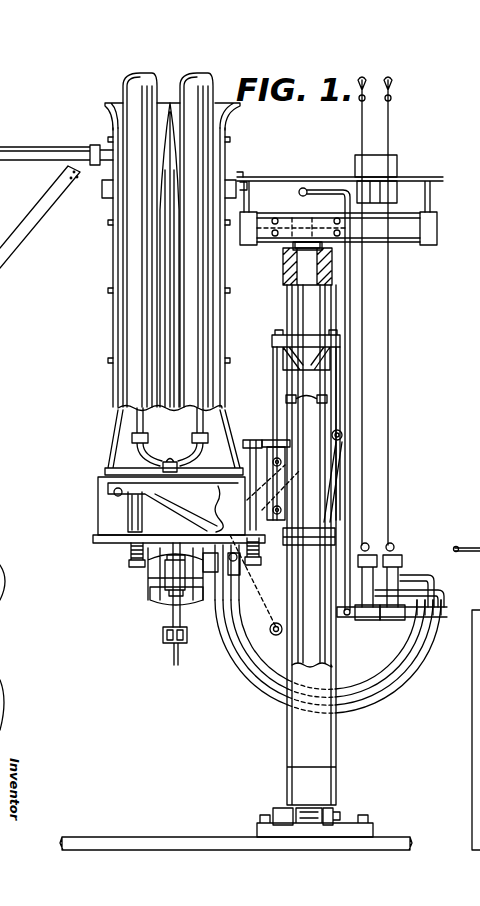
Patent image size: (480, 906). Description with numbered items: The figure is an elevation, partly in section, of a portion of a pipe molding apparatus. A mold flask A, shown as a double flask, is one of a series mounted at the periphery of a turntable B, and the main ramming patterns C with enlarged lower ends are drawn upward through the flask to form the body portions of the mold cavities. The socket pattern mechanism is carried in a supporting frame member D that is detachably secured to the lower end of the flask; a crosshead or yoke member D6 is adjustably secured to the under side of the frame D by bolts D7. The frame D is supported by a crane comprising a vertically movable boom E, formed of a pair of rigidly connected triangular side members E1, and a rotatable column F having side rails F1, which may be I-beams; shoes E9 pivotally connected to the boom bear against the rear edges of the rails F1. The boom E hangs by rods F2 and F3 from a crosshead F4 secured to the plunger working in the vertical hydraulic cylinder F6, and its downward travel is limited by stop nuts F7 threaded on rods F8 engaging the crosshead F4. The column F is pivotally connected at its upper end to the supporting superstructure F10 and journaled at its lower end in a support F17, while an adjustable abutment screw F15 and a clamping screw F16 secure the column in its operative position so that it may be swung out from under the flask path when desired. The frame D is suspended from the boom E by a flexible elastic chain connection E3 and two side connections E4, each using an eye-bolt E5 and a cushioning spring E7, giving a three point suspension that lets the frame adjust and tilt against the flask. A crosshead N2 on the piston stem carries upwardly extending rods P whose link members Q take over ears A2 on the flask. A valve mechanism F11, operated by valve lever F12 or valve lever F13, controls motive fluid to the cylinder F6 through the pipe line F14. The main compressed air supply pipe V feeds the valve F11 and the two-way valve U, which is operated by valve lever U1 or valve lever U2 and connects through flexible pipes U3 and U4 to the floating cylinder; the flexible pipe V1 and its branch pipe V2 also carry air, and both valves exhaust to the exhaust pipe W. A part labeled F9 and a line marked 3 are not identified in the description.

The mold flask A is at (116, 266).
The flask ears A2 is at (115, 448).
The turntable B is at (56, 206).
The main ramming patterns C is at (168, 240).
The supporting frame member D is at (100, 500).
The crosshead or yoke member D6 is at (160, 587).
The bolts D7 is at (160, 560).
The boom or arm E is at (253, 566).
The triangular side members E1 is at (173, 507).
The flexible elastic connection E3 is at (222, 518).
The side flexible elastic connections E4 is at (135, 515).
The eye-bolt E5 is at (265, 551).
The cushioning spring E7 is at (330, 551).
The shoes E9 is at (345, 437).
The rotatable column F is at (358, 511).
The side rails F1 is at (337, 733).
The rod F2 is at (340, 377).
The rod F3 is at (275, 400).
The crosshead F4 is at (298, 358).
The vertical hydraulic cylinder F6 is at (312, 474).
The stop nuts F7 is at (298, 405).
The rods F8 is at (318, 300).
The guide block F9 is at (405, 233).
The supporting superstructure F10 is at (377, 238).
The valve mechanism F11 is at (332, 518).
The valve lever F12 is at (369, 544).
The valve lever F13 is at (361, 126).
The pipe line F14 is at (352, 478).
The adjustable abutment screw F15 is at (287, 807).
The clamping screw F16 is at (307, 818).
The support F17 is at (333, 822).
The crosshead N2 is at (163, 633).
The rods P is at (160, 607).
The link members Q is at (163, 463).
The two-way valve U is at (400, 558).
The valve lever U1 is at (394, 545).
The valve lever U2 is at (393, 120).
The flexible pipe U3 is at (380, 705).
The flexible pipe U4 is at (373, 687).
The main compressed air supply pipe V is at (446, 633).
The flexible pipe V1 is at (232, 627).
The pipe V2 is at (243, 590).
The exhaust pipe W is at (433, 590).
The valve 3 is at (175, 503).